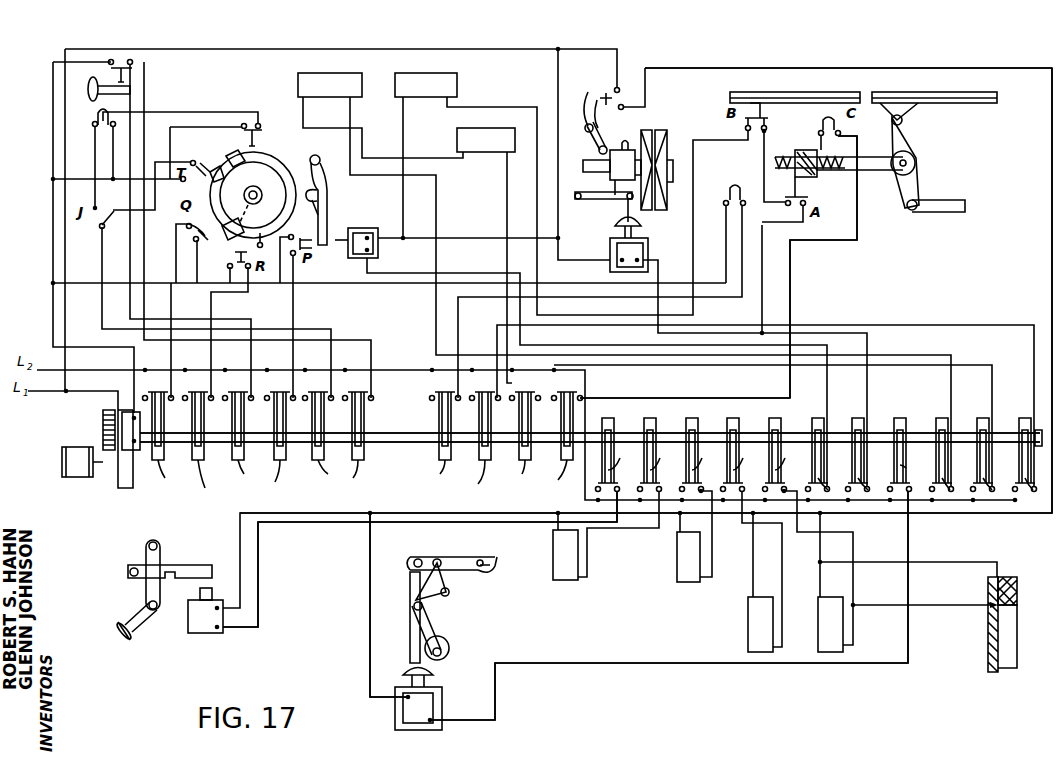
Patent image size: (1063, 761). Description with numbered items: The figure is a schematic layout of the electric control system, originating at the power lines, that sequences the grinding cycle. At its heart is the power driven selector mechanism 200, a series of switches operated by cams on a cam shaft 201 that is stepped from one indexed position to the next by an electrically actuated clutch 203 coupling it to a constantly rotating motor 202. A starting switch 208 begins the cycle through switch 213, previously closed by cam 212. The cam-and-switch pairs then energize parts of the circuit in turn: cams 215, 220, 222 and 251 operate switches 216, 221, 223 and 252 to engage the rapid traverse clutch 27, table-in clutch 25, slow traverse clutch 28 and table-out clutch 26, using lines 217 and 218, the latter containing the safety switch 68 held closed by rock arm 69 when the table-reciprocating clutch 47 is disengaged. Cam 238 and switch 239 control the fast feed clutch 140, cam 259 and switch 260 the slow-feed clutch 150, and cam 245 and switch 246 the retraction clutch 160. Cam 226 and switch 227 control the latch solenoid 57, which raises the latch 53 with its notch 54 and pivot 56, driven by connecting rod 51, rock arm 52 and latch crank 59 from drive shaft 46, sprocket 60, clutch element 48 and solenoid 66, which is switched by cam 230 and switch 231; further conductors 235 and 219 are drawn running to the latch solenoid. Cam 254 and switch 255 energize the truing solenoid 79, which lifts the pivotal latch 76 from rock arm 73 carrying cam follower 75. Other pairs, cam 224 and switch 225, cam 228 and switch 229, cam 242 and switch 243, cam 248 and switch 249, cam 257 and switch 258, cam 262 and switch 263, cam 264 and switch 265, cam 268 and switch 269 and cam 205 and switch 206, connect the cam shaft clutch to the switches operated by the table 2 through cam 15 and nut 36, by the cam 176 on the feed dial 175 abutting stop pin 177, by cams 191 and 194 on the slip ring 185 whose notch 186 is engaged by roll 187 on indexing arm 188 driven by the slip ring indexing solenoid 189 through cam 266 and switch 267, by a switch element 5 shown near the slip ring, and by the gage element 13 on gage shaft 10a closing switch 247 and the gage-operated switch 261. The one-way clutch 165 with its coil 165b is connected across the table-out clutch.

The gage element 13 is at (84, 88).
The gage shaft 10a is at (130, 90).
The gage-operated switch 261 is at (133, 70).
The switch 247 is at (110, 108).
The switch 5 is at (262, 128).
The slip ring 185 is at (270, 158).
The notch 186 is at (264, 189).
The fixed stop pin 177 is at (261, 213).
The cam 194 is at (235, 150).
The cam 191 is at (214, 165).
The cam 176 is at (228, 240).
The feed dial 175 is at (307, 192).
The roll 187 is at (318, 192).
The slip ring indexing arm 188 is at (320, 212).
The slip ring indexing solenoid 189 is at (358, 233).
The fast feed clutch 140 is at (330, 85).
The slow-feed clutch 150 is at (426, 85).
The retraction clutch 160 is at (486, 140).
The safety switch 68 is at (622, 88).
The rock arm 69 is at (590, 92).
The drive shaft 46 is at (586, 158).
The clutch element 48 is at (618, 150).
The clutch 47 is at (630, 138).
The sprocket 60 is at (668, 132).
The solenoid 66 is at (640, 250).
The starting switch 208 is at (732, 185).
The table 2 is at (800, 92).
The cam 15 is at (770, 115).
The nut 36 is at (812, 178).
The line 218 is at (738, 68).
The motor 202 is at (82, 438).
The clutch 203 is at (124, 412).
The selector switch mechanism 200 is at (152, 472).
The cam shaft 201 is at (398, 443).
The switch 249 is at (167, 426).
The cam 248 is at (174, 473).
The switch 269 is at (207, 426).
The cam 268 is at (207, 480).
The switch 258 is at (247, 426).
The cam 257 is at (234, 470).
The switch 263 is at (288, 426).
The cam 262 is at (264, 477).
The switch 243 is at (327, 426).
The cam 242 is at (312, 470).
The switch 265 is at (367, 426).
The cam 264 is at (351, 475).
The switch 213 is at (453, 426).
The cam 212 is at (445, 470).
The switch 225 is at (493, 426).
The cam 224 is at (471, 478).
The switch 229 is at (533, 426).
The cam 228 is at (511, 470).
The switch 206 is at (580, 410).
The cam 205 is at (550, 477).
The line 217 is at (584, 498).
The cam 254 is at (718, 268).
The cam 215 is at (635, 446).
The switch 255 is at (626, 457).
The cam 222 is at (680, 446).
The switch 216 is at (668, 457).
The cam 220 is at (722, 446).
The switch 223 is at (709, 457).
The cam 251 is at (762, 446).
The switch 221 is at (751, 457).
The cam 266 is at (780, 418).
The switch 252 is at (791, 457).
The cam 230 is at (836, 443).
The switch 267 is at (830, 491).
The cam 226 is at (877, 443).
The switch 231 is at (870, 490).
The cam 238 is at (905, 418).
The switch 227 is at (917, 467).
The cam 245 is at (959, 443).
The switch 239 is at (956, 490).
The cam 259 is at (1002, 444).
The switch 246 is at (995, 490).
The switch 260 is at (1031, 462).
The rock arm 73 is at (160, 548).
The pivotal latch 76 is at (180, 565).
The cam follower 75 is at (128, 620).
The solenoid 79 is at (190, 622).
The conductor 235 is at (370, 560).
The latch 53 is at (458, 557).
The pivot 56 is at (437, 559).
The notch 54 is at (510, 556).
The rock arm 52 is at (436, 595).
The connecting rod 51 is at (432, 622).
The latch crank 59 is at (450, 648).
The solenoid 57 is at (410, 709).
The rapid traverse clutch 27 is at (570, 580).
The slow traverse clutch 28 is at (692, 582).
The table-in clutch 25 is at (755, 628).
The table-out clutch 26 is at (822, 628).
The conductor 219 is at (908, 640).
The one-way clutch 165 is at (988, 650).
The coil 165b is at (1017, 585).